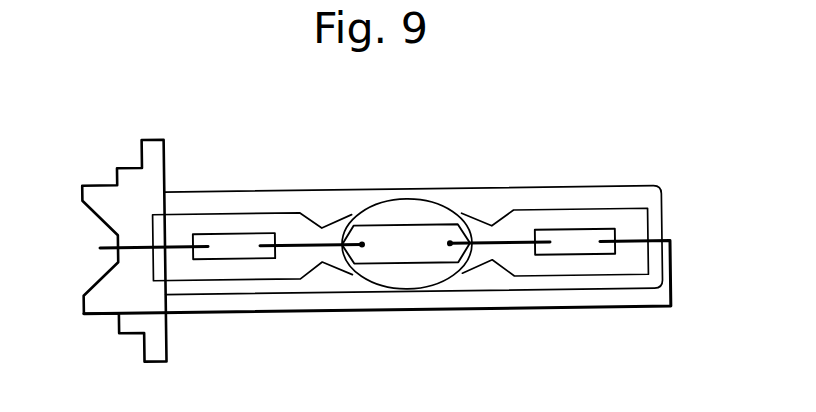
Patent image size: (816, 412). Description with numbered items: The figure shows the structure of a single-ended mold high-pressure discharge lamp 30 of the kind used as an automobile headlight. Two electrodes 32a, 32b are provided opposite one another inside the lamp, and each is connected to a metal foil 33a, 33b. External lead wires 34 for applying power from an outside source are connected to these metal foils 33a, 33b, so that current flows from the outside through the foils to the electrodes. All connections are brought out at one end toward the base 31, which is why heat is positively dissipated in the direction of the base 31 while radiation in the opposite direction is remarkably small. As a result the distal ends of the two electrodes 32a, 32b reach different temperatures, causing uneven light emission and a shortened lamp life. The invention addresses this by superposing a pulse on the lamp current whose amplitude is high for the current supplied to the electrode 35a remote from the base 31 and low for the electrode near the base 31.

The single-ended mold high-pressure discharge lamp 30 is at (386, 98).
The base 31 is at (166, 145).
The electrode 32a is at (178, 244).
The electrode 32b is at (198, 312).
The metal foil 33a is at (228, 248).
The metal foil 33b is at (577, 249).
The external lead wire 34 is at (422, 232).
The electrode remote from the base 35a is at (349, 240).